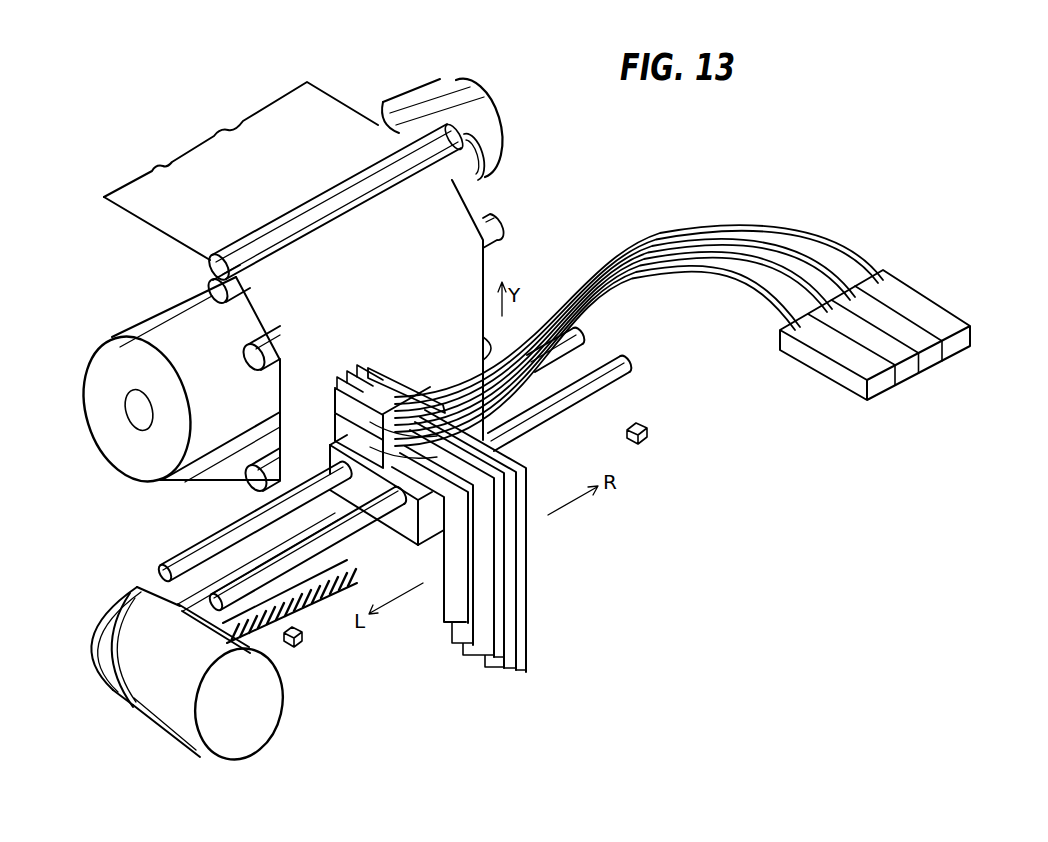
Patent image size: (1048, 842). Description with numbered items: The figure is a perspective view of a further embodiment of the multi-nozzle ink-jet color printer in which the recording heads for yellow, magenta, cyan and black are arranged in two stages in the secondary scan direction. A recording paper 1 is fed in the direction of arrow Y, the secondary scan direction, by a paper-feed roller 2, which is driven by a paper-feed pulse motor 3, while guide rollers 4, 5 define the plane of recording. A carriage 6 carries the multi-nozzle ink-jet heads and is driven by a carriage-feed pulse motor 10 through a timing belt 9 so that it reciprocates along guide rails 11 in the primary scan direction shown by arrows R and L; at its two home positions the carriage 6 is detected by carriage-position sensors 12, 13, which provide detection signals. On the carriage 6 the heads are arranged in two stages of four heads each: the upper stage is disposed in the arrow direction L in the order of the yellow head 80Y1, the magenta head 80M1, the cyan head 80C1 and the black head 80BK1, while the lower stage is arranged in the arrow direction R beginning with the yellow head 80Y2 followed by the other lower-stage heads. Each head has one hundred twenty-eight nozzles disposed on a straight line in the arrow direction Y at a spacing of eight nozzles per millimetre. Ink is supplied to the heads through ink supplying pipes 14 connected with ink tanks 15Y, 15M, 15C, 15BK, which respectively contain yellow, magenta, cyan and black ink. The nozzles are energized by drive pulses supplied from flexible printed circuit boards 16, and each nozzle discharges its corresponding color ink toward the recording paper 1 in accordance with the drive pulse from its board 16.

The recording paper 1 is at (170, 226).
The paper-feed roller 2 is at (208, 267).
The paper-feed pulse motor 3 is at (486, 117).
The guide roller 4 is at (251, 362).
The guide roller 5 is at (257, 482).
The carriage 6 is at (405, 527).
The timing belt 9 is at (168, 596).
The carriage-feed pulse motor 10 is at (259, 694).
The guide rails 11 is at (204, 545).
The carriage-position sensor 12 is at (301, 641).
The carriage-position sensor 13 is at (648, 439).
The ink supplying pipes 14 is at (632, 253).
The ink tank 15BK is at (885, 386).
The ink tank 15C is at (907, 368).
The ink tank 15M is at (933, 357).
The ink tank 15Y is at (960, 340).
The flexible printed circuit boards 16 is at (511, 550).
The multi-nozzle ink-jet head 80BK1 is at (338, 388).
The multi-nozzle ink-jet head 80C1 is at (352, 380).
The multi-nozzle ink-jet head 80M1 is at (362, 376).
The multi-nozzle ink-jet head 80Y1 is at (371, 370).
The multi-nozzle ink-jet head 80Y2 is at (340, 428).